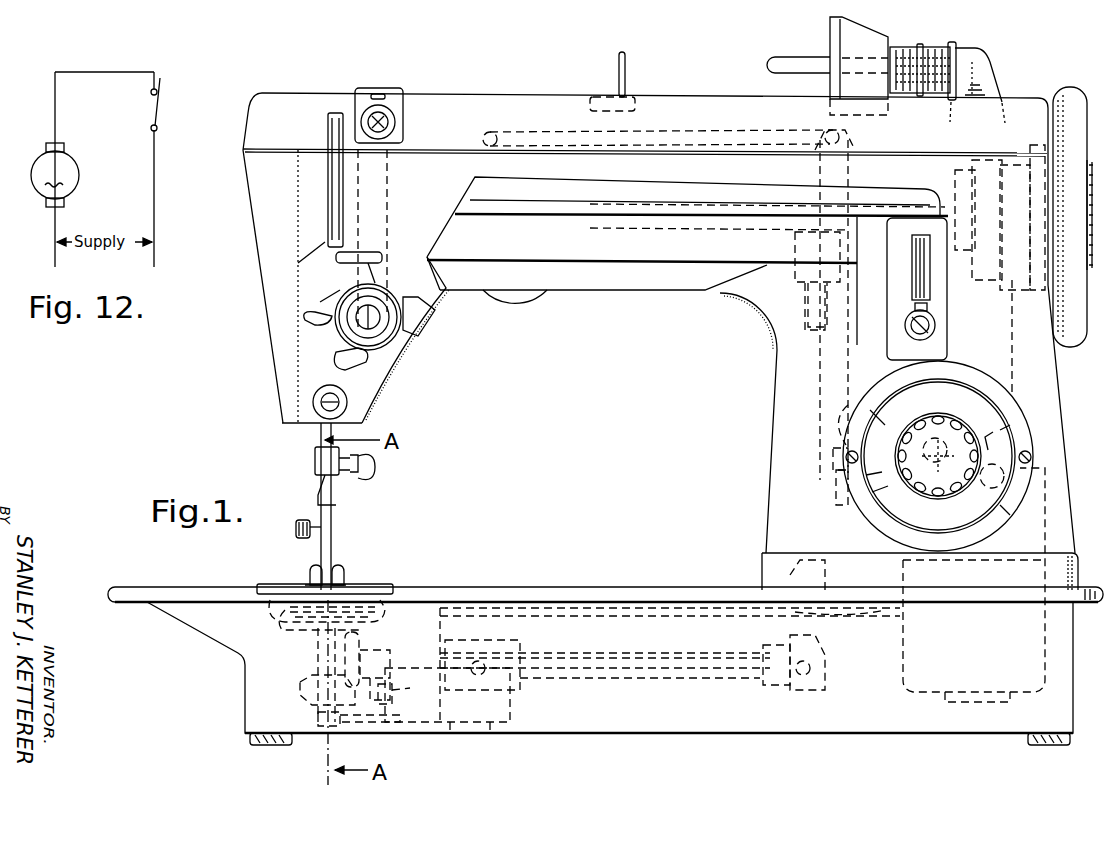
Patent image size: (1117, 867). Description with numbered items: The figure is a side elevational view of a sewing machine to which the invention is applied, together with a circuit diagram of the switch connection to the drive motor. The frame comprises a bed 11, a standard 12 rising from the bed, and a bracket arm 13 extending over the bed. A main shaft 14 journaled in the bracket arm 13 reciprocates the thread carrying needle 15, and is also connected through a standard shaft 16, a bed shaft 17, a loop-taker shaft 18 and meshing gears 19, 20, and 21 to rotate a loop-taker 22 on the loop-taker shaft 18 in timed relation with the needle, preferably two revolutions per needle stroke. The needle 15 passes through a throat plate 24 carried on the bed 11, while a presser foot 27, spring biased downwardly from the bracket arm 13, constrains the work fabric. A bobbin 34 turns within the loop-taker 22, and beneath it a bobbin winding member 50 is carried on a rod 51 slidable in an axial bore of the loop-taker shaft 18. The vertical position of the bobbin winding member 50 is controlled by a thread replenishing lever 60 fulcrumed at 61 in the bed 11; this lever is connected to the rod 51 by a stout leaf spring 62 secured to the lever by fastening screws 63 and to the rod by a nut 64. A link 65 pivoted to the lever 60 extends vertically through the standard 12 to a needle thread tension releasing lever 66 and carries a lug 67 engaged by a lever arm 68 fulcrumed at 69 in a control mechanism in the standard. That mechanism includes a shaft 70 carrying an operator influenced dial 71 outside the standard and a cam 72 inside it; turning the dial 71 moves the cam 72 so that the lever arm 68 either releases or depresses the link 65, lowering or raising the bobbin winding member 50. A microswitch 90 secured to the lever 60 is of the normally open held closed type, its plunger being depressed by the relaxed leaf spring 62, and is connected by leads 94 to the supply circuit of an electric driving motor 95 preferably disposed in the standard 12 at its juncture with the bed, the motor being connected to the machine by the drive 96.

In FIG. 1, the bed 11 is at (570, 588).
In FIG. 1, the standard 12 is at (777, 437).
In FIG. 1, the bracket arm 13 is at (513, 108).
In FIG. 1, the main shaft 14 is at (787, 205).
In FIG. 1, the thread carrying needle 15 is at (331, 505).
In FIG. 1, the standard shaft 16 is at (810, 310).
In FIG. 1, the bed shaft 17 is at (660, 670).
In FIG. 1, the loop-taker shaft 18 is at (318, 660).
In FIG. 1, the meshing gear 19 is at (805, 240).
In FIG. 1, the meshing gear 20 is at (822, 670).
In FIG. 1, the meshing gear 21 is at (375, 682).
In FIG. 1, the loop-taker 22 is at (405, 605).
In FIG. 1, the throat plate 24 is at (360, 585).
In FIG. 1, the presser foot 27 is at (310, 580).
In FIG. 1, the bobbin 34 is at (388, 610).
In FIG. 1, the bobbin winding member 50 is at (288, 626).
In FIG. 1, the rod 51 is at (318, 645).
In FIG. 1, the thread replenishing lever 60 is at (540, 682).
In FIG. 1, the fulcrum 61 is at (478, 664).
In FIG. 1, the leaf spring 62 is at (370, 722).
In FIG. 1, the fastening screws 63 is at (492, 724).
In FIG. 1, the nut 64 is at (318, 722).
In FIG. 1, the link 65 is at (846, 446).
In FIG. 1, the needle thread tension releasing lever 66 is at (700, 130).
In FIG. 1, the lug 67 is at (836, 480).
In FIG. 1, the lever arm 68 is at (833, 458).
In FIG. 1, the fulcrum 69 is at (993, 495).
In FIG. 1, the shaft 70 is at (952, 437).
In FIG. 1, the operator influenced dial 71 is at (955, 395).
In FIG. 1, the cam 72 is at (983, 440).
In FIG. 1, the microswitch 90 is at (398, 698).
In FIG. 12, the microswitch 90 is at (160, 95).
In FIG. 1, the leads 94 is at (600, 618).
In FIG. 12, the leads 94 is at (58, 103).
In FIG. 1, the electric sewing machine driving motor 95 is at (928, 697).
In FIG. 12, the electric sewing machine driving motor 95 is at (55, 175).
In FIG. 1, the drive 96 is at (1012, 287).